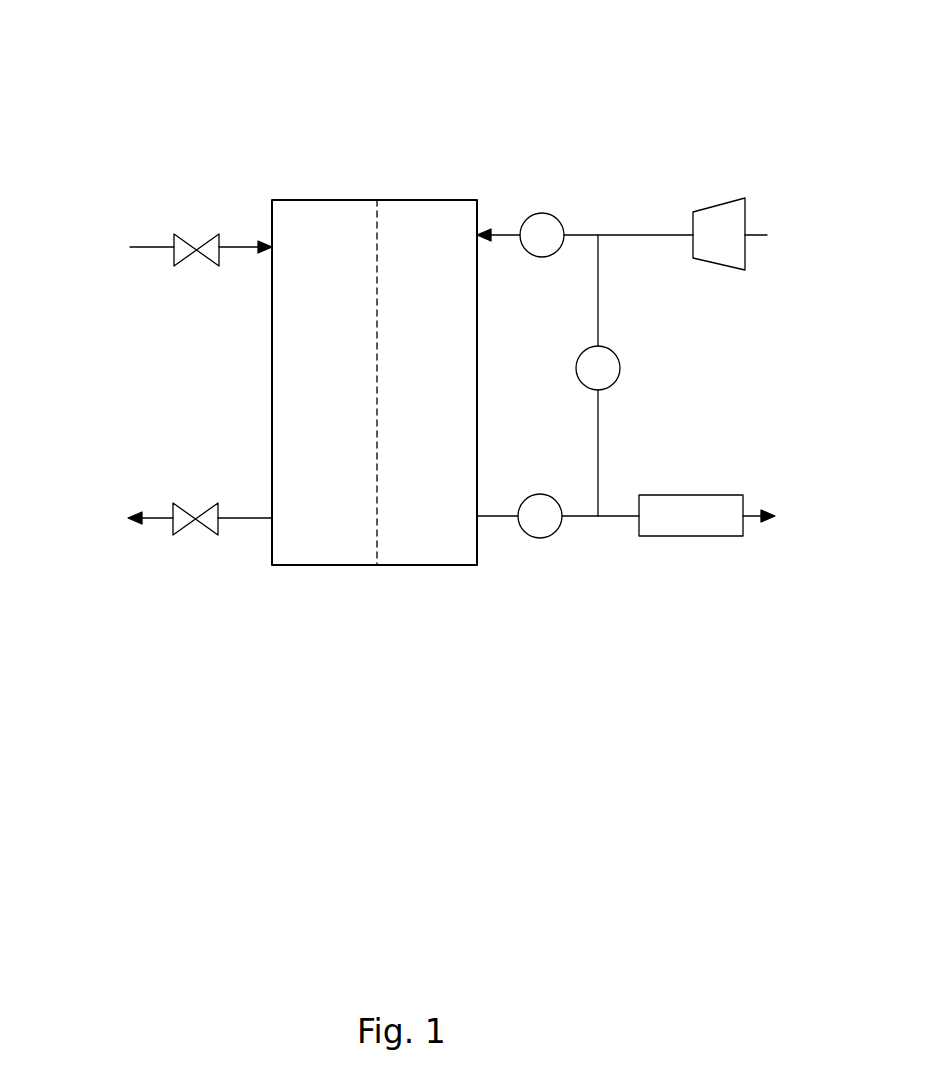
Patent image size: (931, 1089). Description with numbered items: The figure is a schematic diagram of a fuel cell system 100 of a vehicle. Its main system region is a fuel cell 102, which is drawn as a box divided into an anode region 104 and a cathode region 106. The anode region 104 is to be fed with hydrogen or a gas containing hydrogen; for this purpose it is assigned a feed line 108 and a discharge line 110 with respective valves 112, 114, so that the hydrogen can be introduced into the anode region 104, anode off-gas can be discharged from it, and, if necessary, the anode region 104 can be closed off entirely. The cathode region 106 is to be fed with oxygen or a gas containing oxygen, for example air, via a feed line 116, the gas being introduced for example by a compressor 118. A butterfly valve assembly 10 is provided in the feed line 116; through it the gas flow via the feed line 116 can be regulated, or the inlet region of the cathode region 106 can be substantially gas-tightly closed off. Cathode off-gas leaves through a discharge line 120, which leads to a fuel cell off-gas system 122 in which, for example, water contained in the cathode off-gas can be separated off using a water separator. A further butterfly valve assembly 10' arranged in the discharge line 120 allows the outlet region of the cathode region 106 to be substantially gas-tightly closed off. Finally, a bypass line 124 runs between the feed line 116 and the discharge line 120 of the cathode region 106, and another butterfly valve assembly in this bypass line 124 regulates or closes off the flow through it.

The fuel cell system 100 is at (587, 60).
The fuel cell 102 is at (360, 157).
The anode region 104 is at (293, 357).
The cathode region 106 is at (498, 347).
The feed line 108 is at (140, 247).
The discharge line 110 is at (148, 519).
The valve 112 is at (188, 246).
The valve 114 is at (205, 530).
The feed line 116 is at (585, 230).
The compressor 118 is at (713, 208).
The discharge line 120 is at (617, 518).
The fuel cell off-gas system 122 is at (718, 537).
The bypass line 124 is at (600, 437).
The butterfly valve assembly 10 is at (561, 197).
The butterfly valve assembly 10' is at (523, 559).